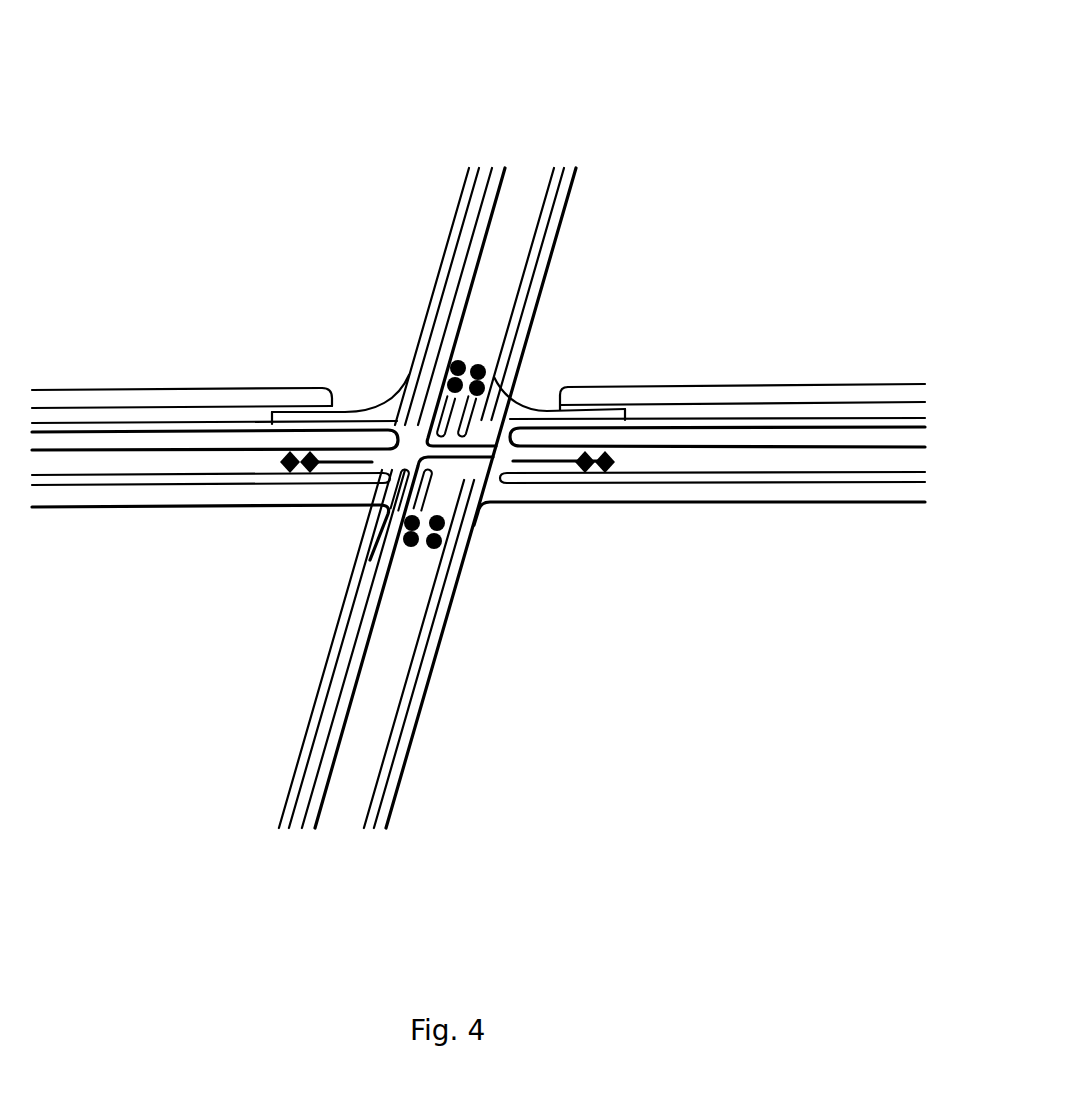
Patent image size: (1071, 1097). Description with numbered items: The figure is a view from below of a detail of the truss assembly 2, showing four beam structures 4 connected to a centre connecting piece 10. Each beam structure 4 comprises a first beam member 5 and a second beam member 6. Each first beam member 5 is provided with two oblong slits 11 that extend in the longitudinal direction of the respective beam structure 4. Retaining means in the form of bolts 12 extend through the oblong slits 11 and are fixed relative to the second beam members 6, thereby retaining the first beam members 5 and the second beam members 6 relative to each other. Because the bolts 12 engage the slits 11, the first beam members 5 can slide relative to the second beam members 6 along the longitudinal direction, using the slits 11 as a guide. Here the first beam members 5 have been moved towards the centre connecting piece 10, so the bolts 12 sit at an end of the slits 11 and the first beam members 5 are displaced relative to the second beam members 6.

The truss assembly 2 is at (228, 128).
The beam structure 4 is at (576, 196).
The first beam member 5 is at (500, 290).
The second beam member 6 is at (440, 262).
The centre connecting piece 10 is at (390, 418).
The oblong slit 11 is at (450, 408).
The bolt 12 is at (462, 367).